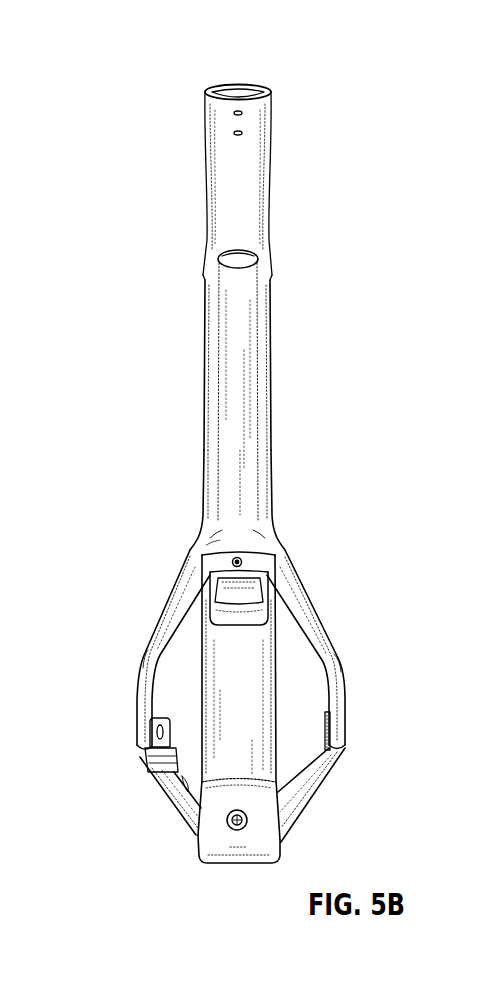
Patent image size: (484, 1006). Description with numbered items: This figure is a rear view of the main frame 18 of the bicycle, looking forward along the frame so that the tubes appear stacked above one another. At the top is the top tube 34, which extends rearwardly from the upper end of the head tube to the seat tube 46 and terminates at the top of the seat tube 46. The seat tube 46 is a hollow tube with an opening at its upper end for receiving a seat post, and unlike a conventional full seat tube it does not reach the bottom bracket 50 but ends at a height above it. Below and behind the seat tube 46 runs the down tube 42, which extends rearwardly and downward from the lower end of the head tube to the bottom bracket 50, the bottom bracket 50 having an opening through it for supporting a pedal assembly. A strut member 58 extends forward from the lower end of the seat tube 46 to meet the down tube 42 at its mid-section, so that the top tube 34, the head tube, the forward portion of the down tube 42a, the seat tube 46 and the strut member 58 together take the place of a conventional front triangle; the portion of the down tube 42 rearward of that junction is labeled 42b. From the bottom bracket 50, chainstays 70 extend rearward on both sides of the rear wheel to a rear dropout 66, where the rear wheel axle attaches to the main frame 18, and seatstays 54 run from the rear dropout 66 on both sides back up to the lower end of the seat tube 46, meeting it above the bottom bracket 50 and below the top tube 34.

The main frame 18 is at (127, 129).
The top tube 34 is at (243, 167).
The seat tube 46 is at (243, 315).
The down tube 42 is at (268, 405).
The forward portion of the down tube 42a is at (268, 493).
The stem body 42b is at (252, 697).
The strut member 58 is at (227, 583).
The seatstays 54 is at (160, 633).
The rear dropout 66 is at (142, 743).
The chainstays 70 is at (177, 786).
The bottom bracket 50 is at (237, 864).